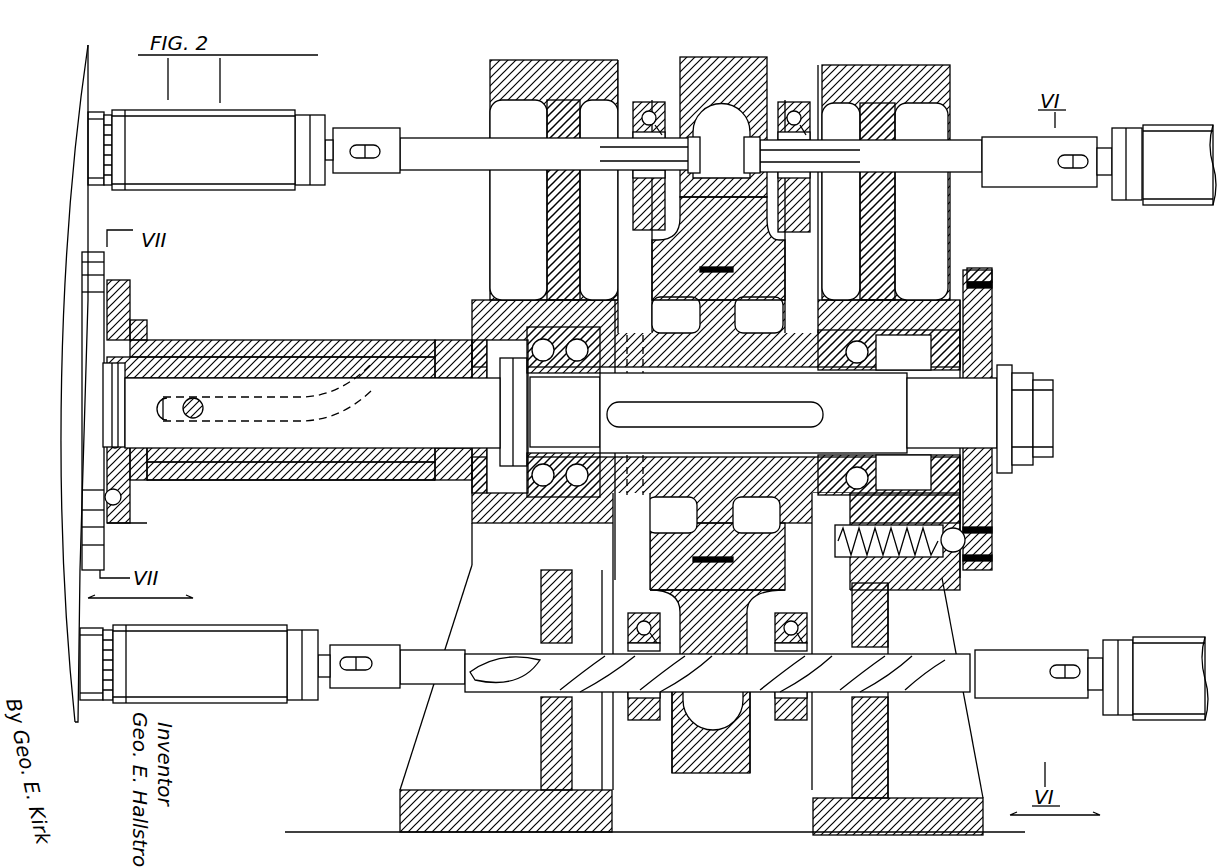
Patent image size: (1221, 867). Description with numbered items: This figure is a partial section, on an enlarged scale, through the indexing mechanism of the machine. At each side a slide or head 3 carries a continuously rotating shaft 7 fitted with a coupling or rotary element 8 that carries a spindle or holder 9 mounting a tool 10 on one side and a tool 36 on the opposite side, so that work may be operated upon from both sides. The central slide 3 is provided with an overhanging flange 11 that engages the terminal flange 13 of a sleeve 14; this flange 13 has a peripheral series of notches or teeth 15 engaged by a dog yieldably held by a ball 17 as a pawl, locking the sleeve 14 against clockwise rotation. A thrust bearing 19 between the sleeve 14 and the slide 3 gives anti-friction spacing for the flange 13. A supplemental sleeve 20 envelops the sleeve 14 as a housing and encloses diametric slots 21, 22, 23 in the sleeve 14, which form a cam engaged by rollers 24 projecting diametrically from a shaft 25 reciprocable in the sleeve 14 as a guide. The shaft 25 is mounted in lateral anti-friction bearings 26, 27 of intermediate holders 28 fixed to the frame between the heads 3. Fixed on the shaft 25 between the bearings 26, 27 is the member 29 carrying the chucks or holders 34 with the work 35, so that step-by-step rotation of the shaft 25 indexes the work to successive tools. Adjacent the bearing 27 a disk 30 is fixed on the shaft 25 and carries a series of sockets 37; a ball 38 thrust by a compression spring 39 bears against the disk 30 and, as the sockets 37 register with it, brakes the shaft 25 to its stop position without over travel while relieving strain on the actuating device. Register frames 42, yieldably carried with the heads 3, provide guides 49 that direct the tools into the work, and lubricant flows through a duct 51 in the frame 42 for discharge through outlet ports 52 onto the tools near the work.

The slide or head 3 is at (88, 215).
The shaft 7 is at (182, 170).
The coupling or rotary element 8 is at (290, 187).
The spindle or holder 9 is at (357, 176).
The tool 10 is at (512, 172).
The overhanging flange 11 is at (128, 300).
The terminal flange 13 is at (82, 495).
The sleeve 14 is at (222, 470).
The notches or teeth 15 is at (122, 498).
The ball 17 is at (118, 510).
The thrust bearing 19 is at (104, 398).
The supplemental sleeve 20 is at (288, 330).
The slot or way 21 is at (183, 397).
The slot or way 22 is at (344, 399).
The slot or way 23 is at (378, 342).
The roller 24 is at (205, 408).
The shaft 25 is at (440, 372).
The anti-friction bearing 26 is at (597, 300).
The anti-friction bearing 27 is at (833, 332).
The intermediate holder 28 is at (480, 569).
The member 29 is at (652, 300).
The disk 30 is at (992, 335).
The chuck or holder 34 is at (727, 182).
The work 35 is at (770, 48).
The tool 36 is at (903, 174).
The socket 37 is at (992, 292).
The ball 38 is at (968, 547).
The compression spring 39 is at (910, 582).
The frame 42 is at (656, 91).
The guide 49 is at (636, 176).
The duct 51 is at (640, 118).
The outlet port 52 is at (664, 126).